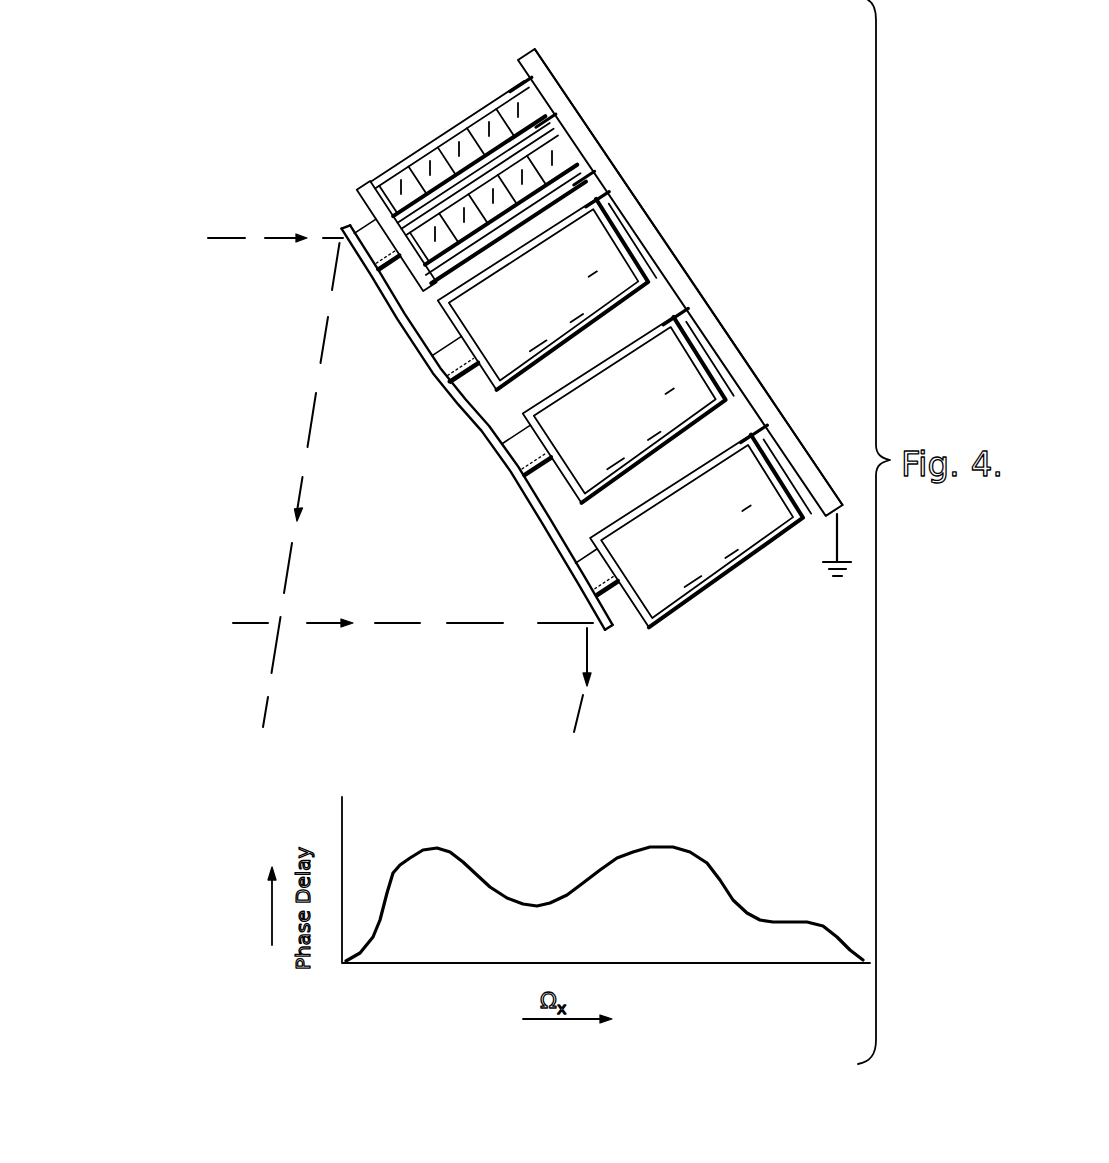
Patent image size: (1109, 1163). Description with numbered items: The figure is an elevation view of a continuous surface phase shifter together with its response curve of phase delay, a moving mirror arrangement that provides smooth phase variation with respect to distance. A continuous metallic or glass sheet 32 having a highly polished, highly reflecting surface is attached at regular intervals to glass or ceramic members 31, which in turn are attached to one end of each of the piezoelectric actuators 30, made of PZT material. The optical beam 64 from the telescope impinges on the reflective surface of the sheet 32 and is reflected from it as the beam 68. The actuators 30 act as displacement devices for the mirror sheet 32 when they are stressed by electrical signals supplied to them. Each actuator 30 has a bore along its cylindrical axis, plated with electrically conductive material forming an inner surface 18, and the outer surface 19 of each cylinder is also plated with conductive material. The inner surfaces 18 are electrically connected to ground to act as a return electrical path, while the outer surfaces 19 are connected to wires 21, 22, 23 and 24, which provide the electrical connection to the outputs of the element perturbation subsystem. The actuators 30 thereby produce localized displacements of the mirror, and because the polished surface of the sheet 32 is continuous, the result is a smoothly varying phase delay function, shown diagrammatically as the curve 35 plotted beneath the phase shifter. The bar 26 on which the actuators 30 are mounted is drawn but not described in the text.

The inner surface 18 is at (555, 120).
The outer surface 19 is at (430, 143).
The wire 21 is at (630, 155).
The wire 22 is at (705, 270).
The wire 23 is at (780, 378).
The wire 24 is at (845, 478).
The feed line conductor 26 is at (640, 218).
The piezoelectric actuator 30 is at (522, 80).
The glass or ceramic member 31 is at (370, 240).
The continuous metallic or glass sheet 32 is at (478, 437).
The phase delay function 35 is at (440, 850).
The optical beam 64 is at (236, 238).
The reflected beam 68 is at (292, 572).